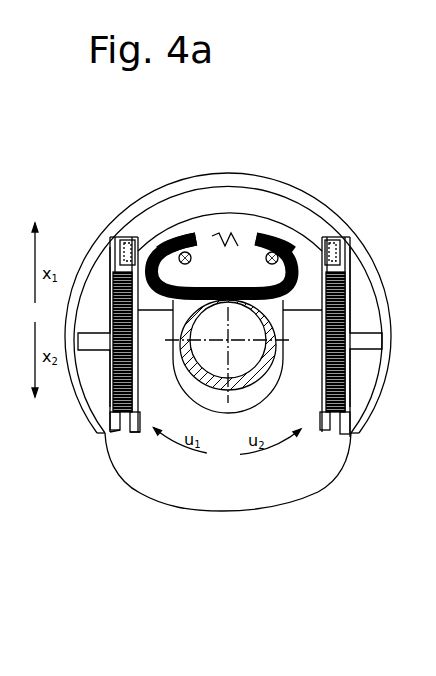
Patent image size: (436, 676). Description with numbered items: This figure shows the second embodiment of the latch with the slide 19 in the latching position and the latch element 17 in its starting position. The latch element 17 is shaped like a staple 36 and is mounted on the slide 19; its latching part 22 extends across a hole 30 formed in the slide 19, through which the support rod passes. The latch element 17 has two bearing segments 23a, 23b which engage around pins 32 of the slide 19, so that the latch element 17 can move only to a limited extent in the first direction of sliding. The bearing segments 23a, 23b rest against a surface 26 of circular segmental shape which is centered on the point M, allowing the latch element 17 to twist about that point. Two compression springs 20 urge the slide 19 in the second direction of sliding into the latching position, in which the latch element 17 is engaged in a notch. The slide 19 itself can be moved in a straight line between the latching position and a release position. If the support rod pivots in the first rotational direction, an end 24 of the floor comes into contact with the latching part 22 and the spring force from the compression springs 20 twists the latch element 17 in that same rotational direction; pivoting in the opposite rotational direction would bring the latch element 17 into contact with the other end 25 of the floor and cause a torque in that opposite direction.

The latch element 17 is at (130, 268).
The slide 19 is at (273, 475).
The compression springs 20 is at (348, 366).
The latching part 22 is at (243, 276).
The bearing segment 23a is at (155, 246).
The bearing segment 23b is at (302, 246).
The end of the floor 24 is at (112, 426).
The end of the floor 25 is at (345, 395).
The surface of circular segmental shape 26 is at (239, 284).
The hole 30 is at (210, 428).
The pins 32 is at (172, 236).
The staple 36 is at (323, 270).
The point M is at (228, 340).